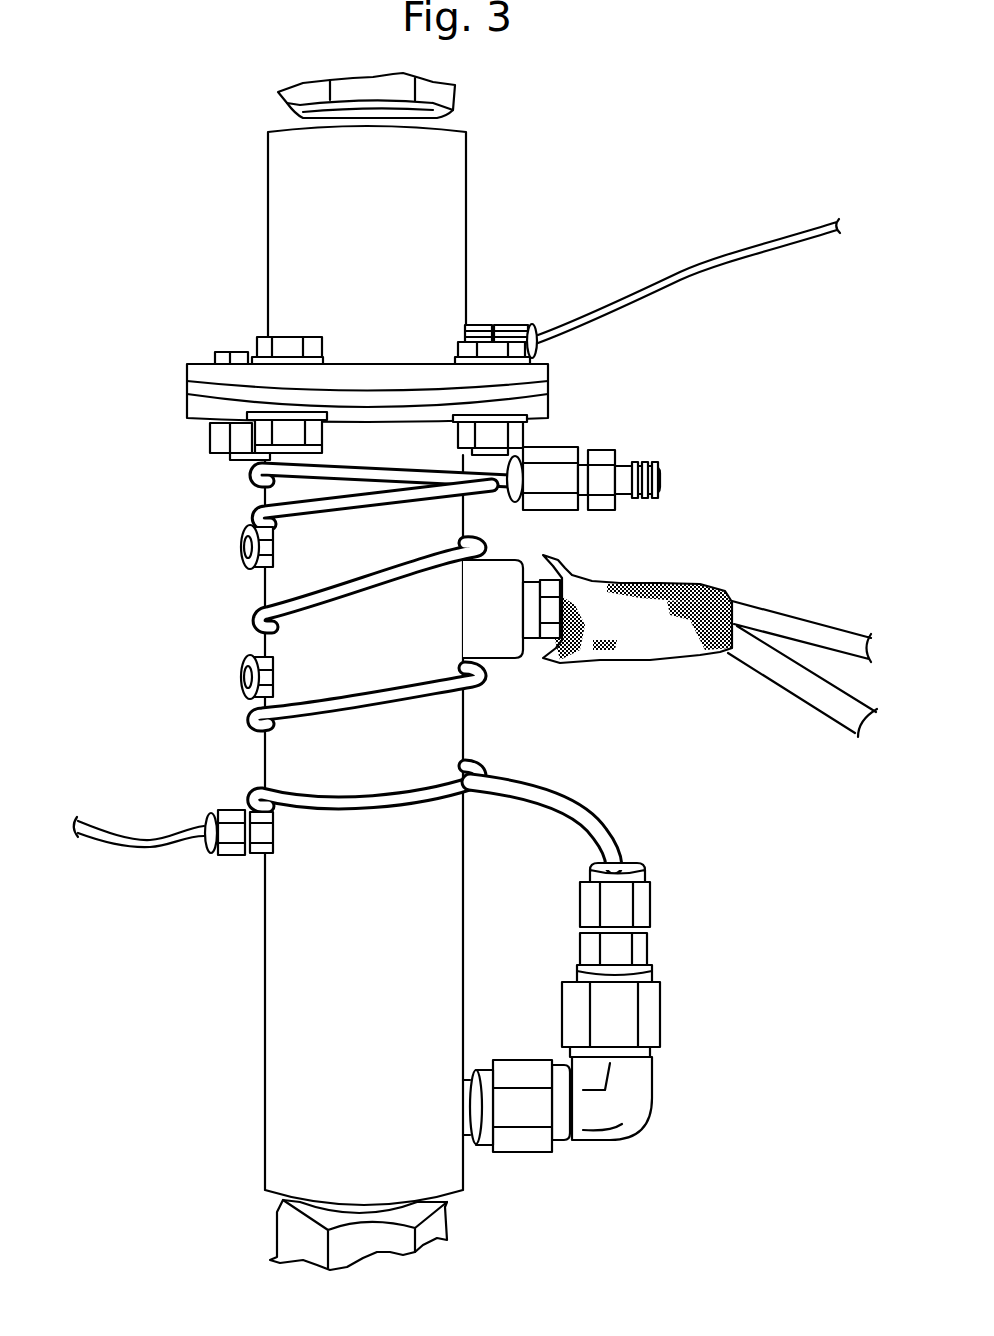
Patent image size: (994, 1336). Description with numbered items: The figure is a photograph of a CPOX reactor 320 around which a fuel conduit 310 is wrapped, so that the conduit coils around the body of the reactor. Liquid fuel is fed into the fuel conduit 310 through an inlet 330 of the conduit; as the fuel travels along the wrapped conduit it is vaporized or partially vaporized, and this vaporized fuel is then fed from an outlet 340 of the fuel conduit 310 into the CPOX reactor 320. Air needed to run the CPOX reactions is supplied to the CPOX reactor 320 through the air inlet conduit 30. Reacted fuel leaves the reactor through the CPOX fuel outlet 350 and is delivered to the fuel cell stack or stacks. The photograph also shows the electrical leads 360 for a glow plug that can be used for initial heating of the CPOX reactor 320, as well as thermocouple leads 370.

The air inlet conduit 30 is at (472, 1232).
The fuel conduit 310 is at (253, 615).
The CPOX reactor 320 is at (343, 952).
The inlet 330 is at (645, 435).
The outlet 340 is at (690, 892).
The CPOX fuel outlet 350 is at (232, 128).
The electrical leads 360 is at (818, 620).
The thermocouple leads 370 is at (703, 262).